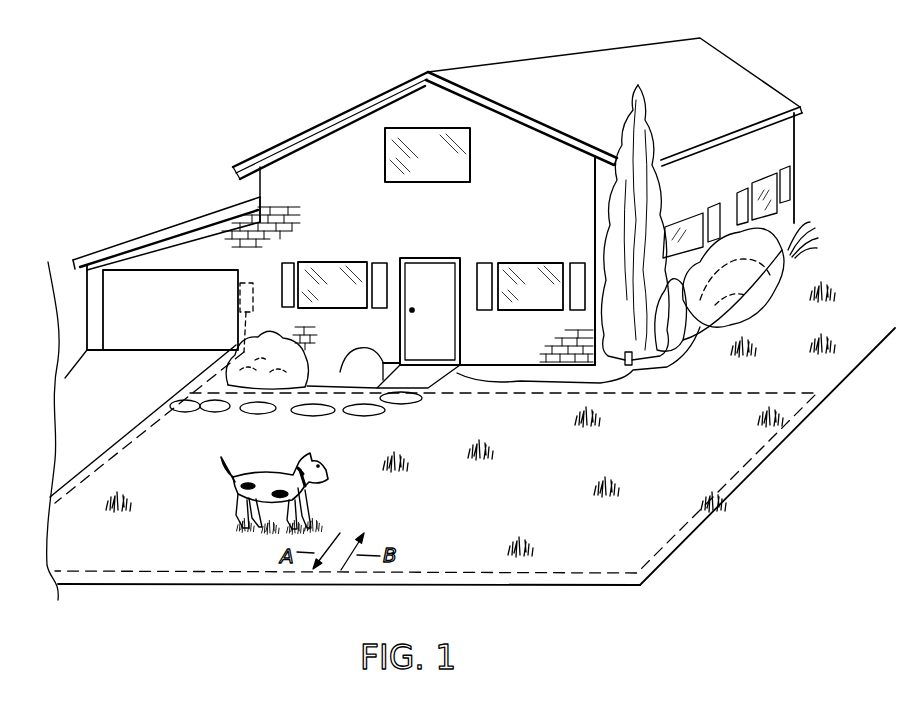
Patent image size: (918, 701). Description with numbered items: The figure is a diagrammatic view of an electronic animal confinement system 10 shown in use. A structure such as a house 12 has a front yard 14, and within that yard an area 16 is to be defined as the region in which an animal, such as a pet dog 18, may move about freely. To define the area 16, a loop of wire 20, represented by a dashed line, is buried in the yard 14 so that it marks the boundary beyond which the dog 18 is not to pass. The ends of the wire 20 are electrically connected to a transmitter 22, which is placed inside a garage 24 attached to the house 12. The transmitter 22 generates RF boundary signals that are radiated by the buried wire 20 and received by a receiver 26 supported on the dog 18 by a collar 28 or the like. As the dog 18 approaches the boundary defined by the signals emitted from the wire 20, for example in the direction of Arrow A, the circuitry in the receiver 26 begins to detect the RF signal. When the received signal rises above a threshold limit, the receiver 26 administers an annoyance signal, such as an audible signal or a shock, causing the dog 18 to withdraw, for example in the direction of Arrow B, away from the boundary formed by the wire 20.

The electronic animal confinement system 10 is at (300, 596).
The house 12 is at (501, 257).
The front yard 14 is at (738, 490).
The area 16 is at (654, 494).
The pet dog 18 is at (233, 488).
The loop of wire 20 is at (447, 570).
The transmitter 22 is at (234, 298).
The garage 24 is at (182, 258).
The receiver 26 is at (300, 473).
The collar 28 is at (304, 486).